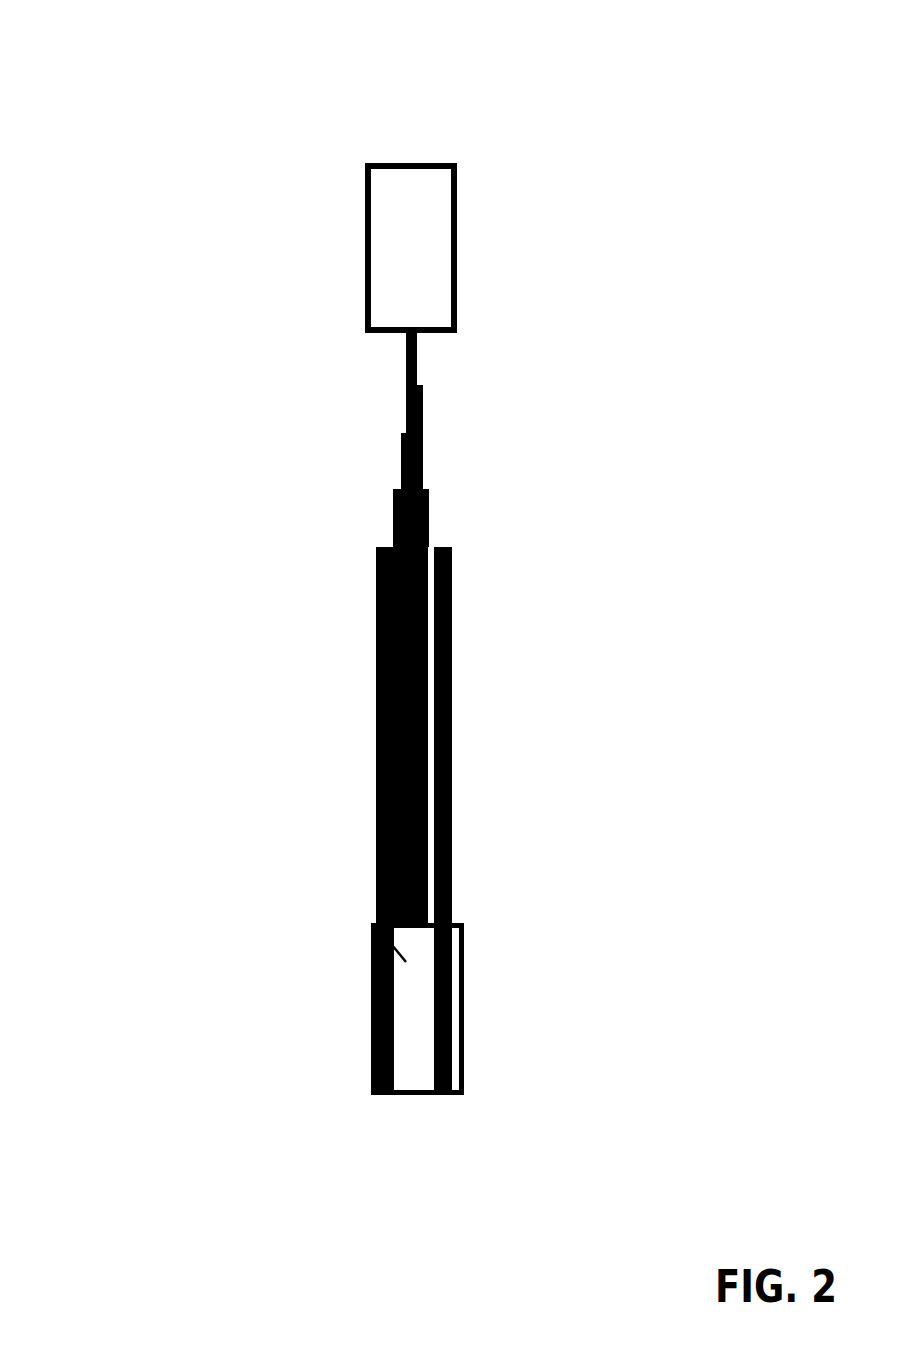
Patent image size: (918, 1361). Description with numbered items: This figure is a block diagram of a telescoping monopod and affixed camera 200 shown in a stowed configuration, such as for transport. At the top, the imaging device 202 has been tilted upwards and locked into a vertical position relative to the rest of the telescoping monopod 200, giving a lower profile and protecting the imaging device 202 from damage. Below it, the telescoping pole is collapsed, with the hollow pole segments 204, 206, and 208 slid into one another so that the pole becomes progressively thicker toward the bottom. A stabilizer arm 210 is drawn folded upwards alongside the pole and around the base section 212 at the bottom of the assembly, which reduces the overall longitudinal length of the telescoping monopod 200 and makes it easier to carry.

The telescoping monopod and affixed camera 200 is at (116, 38).
The imaging device 202 is at (370, 165).
The hollow pole segment 204 is at (406, 402).
The hollow pole segment 206 is at (401, 456).
The hollow pole segment 208 is at (393, 505).
The stabilizer arm 210 is at (450, 653).
The base section 212 is at (375, 927).